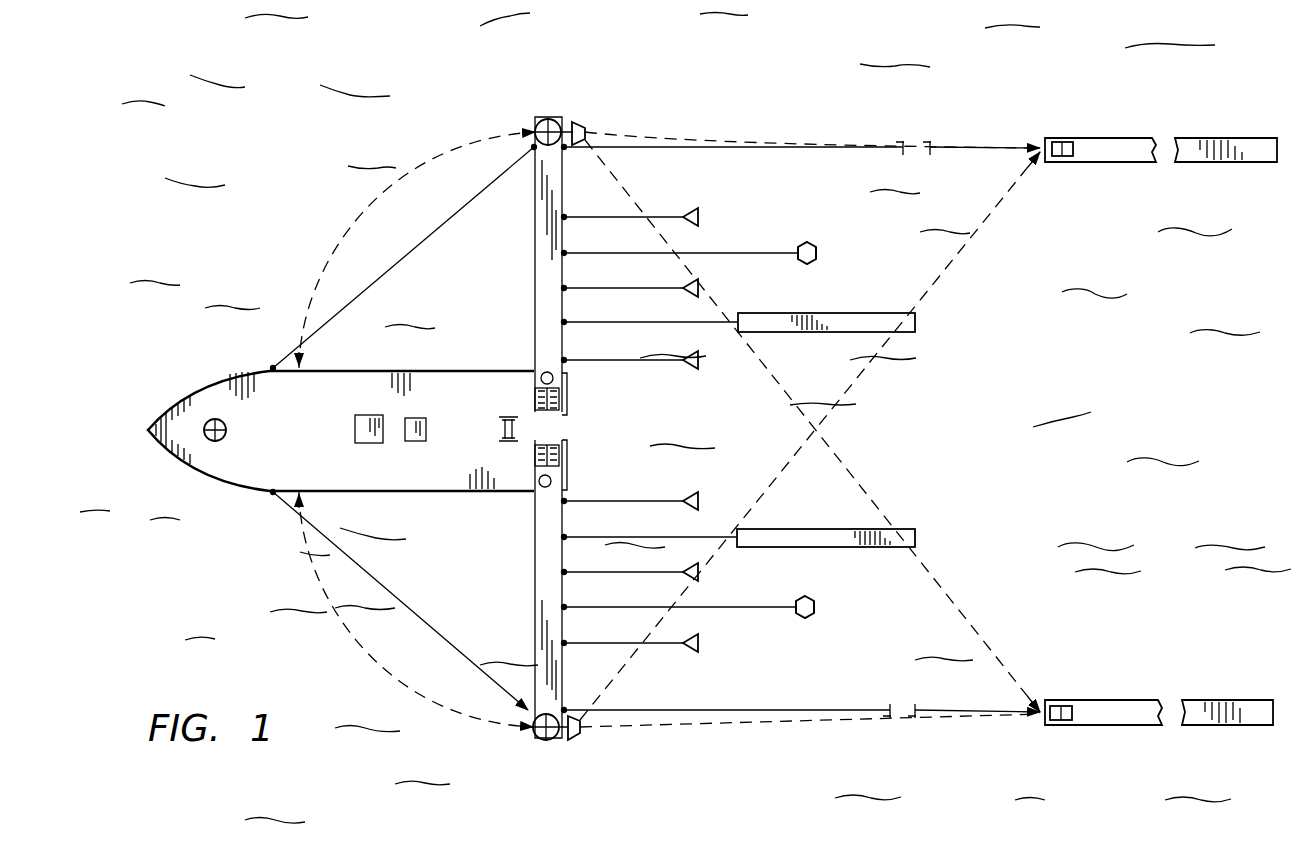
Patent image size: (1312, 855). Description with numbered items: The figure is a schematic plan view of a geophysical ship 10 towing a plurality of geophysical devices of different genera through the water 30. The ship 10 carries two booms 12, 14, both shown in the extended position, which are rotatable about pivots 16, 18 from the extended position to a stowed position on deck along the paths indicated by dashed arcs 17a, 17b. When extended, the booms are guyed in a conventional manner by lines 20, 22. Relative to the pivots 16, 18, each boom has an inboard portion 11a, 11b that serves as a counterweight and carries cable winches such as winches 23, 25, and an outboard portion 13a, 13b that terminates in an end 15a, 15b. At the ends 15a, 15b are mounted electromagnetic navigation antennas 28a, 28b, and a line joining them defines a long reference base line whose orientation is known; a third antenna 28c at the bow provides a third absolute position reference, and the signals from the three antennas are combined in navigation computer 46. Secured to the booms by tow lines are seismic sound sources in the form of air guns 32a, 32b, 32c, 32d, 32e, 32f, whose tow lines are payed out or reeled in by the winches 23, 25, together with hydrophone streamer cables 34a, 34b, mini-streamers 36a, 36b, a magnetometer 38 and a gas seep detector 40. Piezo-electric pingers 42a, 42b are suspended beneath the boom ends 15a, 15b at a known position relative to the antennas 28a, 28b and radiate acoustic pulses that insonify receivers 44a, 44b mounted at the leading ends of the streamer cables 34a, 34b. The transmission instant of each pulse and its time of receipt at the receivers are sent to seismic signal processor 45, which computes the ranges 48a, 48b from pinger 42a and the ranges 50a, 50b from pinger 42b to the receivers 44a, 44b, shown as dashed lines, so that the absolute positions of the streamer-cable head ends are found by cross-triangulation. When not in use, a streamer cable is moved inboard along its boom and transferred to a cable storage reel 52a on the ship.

The ship 10 is at (306, 443).
The inboard portion of boom 11a is at (533, 397).
The inboard portion of boom 11b is at (533, 456).
The boom 12 is at (535, 246).
The outboard portion of boom 13a is at (534, 294).
The outboard portion of boom 13b is at (534, 572).
The boom 14 is at (535, 614).
The boom end 15a is at (536, 124).
The boom end 15b is at (537, 734).
The pivot 16 is at (544, 373).
The dashed arc 17a is at (347, 220).
The dashed arc 17b is at (348, 640).
The pivot 18 is at (542, 486).
The guy line 20 is at (405, 255).
The guy line 22 is at (412, 580).
The cable winch 23 is at (567, 402).
The cable winch 25 is at (567, 454).
The antenna 28a is at (538, 118).
The antenna 28b is at (542, 741).
The antenna 28c is at (223, 439).
The water 30 is at (166, 248).
The air gun 32a is at (699, 213).
The air gun 32b is at (699, 284).
The air gun 32c is at (699, 365).
The air gun 32d is at (699, 496).
The air gun 32e is at (699, 574).
The air gun 32f is at (699, 647).
The hydrophone streamer cable 34a is at (1118, 152).
The hydrophone streamer cable 34b is at (1115, 710).
The mini-streamer 36a is at (915, 322).
The mini-streamer 36b is at (915, 538).
The magnetometer 38 is at (817, 252).
The gas seep detector 40 is at (815, 607).
The acoustic device (pinger) 42a is at (586, 124).
The acoustic device (pinger) 42b is at (580, 741).
The receiver 44a is at (1062, 142).
The receiver 44b is at (1061, 720).
The seismic signal processor 45 is at (365, 443).
The navigation computer 46 is at (415, 441).
The range 48a is at (745, 136).
The range 48b is at (985, 630).
The range 50a is at (978, 238).
The range 50b is at (745, 724).
The cable storage reel 52a is at (499, 428).